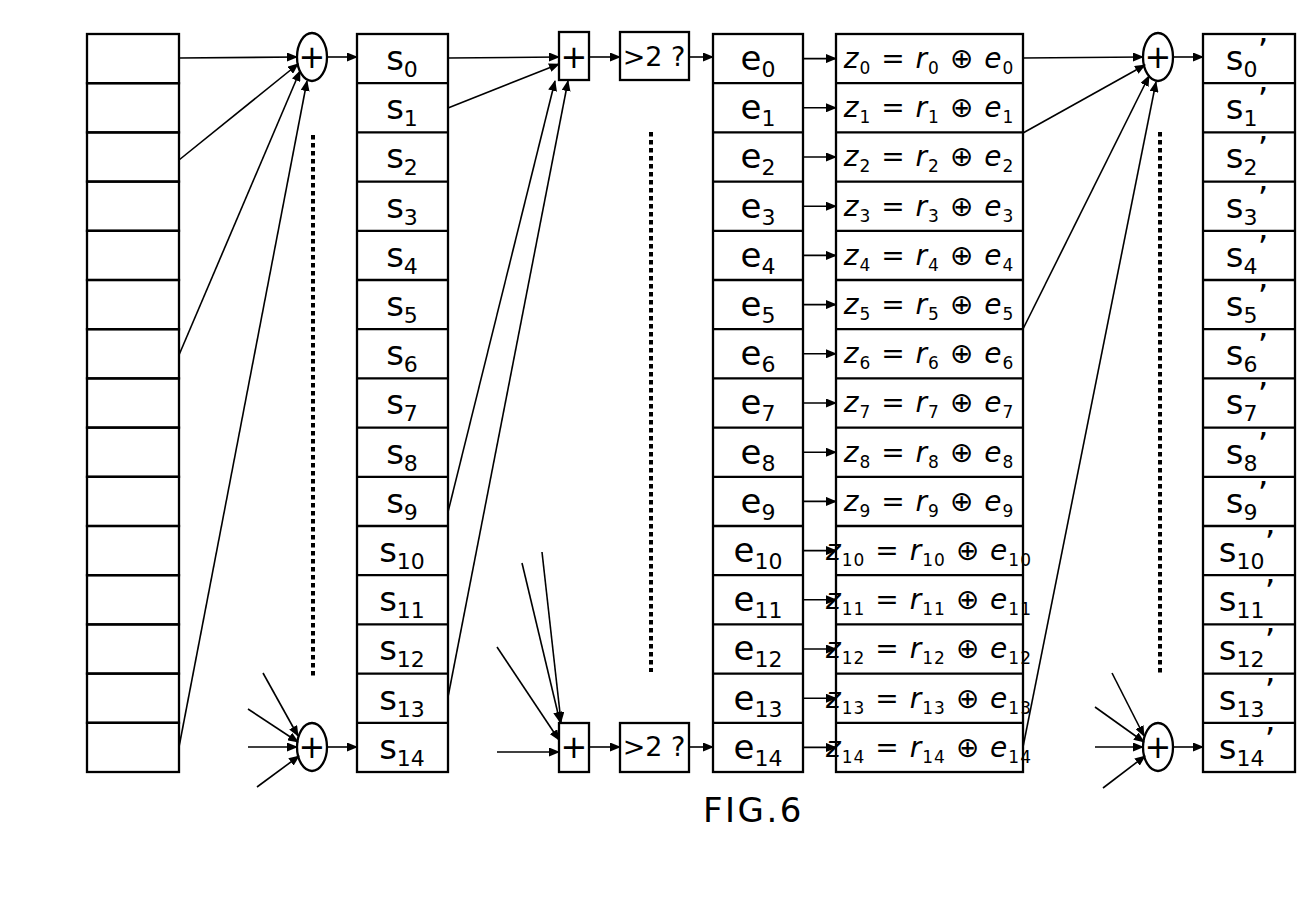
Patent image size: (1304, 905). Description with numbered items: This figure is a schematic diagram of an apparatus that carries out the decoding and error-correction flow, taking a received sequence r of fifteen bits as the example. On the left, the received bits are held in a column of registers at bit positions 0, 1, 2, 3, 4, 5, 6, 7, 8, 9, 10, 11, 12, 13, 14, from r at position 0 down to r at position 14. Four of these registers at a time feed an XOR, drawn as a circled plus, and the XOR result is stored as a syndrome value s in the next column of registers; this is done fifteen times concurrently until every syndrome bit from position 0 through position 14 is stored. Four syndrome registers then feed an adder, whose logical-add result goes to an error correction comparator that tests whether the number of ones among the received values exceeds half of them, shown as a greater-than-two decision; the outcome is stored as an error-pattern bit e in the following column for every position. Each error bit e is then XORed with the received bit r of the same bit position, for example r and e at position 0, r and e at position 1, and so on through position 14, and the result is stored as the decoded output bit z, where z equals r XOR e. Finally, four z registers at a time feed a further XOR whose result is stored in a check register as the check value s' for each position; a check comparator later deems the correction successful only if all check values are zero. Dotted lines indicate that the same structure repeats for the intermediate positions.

The bit position index 0 is at (133, 58).
The bit position index 1 is at (133, 107).
The bit position index 2 is at (133, 156).
The bit position index 3 is at (133, 206).
The bit position index 4 is at (133, 255).
The bit position index 5 is at (133, 304).
The bit position index 6 is at (133, 353).
The bit position index 7 is at (133, 402).
The bit position index 8 is at (133, 452).
The bit position index 9 is at (133, 501).
The bit position index 10 is at (133, 550).
The bit position index 11 is at (133, 599).
The bit position index 12 is at (133, 648).
The bit position index 13 is at (133, 698).
The bit position index 14 is at (133, 747).